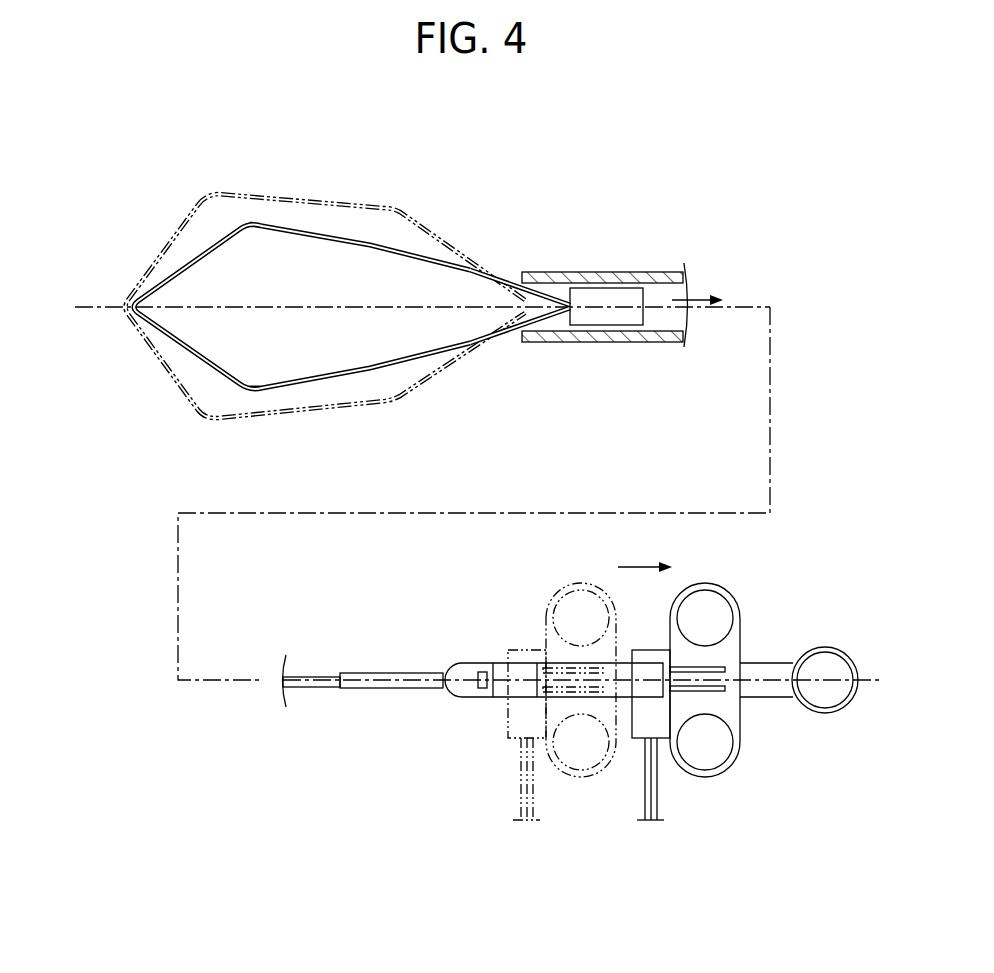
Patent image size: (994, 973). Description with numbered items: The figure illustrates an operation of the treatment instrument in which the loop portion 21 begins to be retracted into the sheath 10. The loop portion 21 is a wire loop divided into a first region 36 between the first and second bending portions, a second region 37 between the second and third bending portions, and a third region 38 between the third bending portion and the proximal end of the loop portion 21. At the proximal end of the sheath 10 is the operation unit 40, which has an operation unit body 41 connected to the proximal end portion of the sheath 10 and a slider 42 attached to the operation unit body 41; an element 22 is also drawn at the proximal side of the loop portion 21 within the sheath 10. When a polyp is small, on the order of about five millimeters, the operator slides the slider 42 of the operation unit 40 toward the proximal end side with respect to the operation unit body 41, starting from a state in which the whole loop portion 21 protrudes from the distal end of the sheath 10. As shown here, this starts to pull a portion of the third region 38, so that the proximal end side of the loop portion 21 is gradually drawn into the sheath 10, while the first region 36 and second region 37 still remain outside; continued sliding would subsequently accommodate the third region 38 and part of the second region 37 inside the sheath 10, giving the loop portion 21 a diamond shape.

The sheath 10 is at (657, 272).
The loop portion 21 is at (337, 289).
The connecting member 22 is at (673, 313).
The first region 36 is at (187, 262).
The second region 37 is at (303, 232).
The third region 38 is at (463, 260).
The operation unit 40 is at (724, 673).
The operation unit body 41 is at (777, 665).
The slider 42 is at (705, 777).